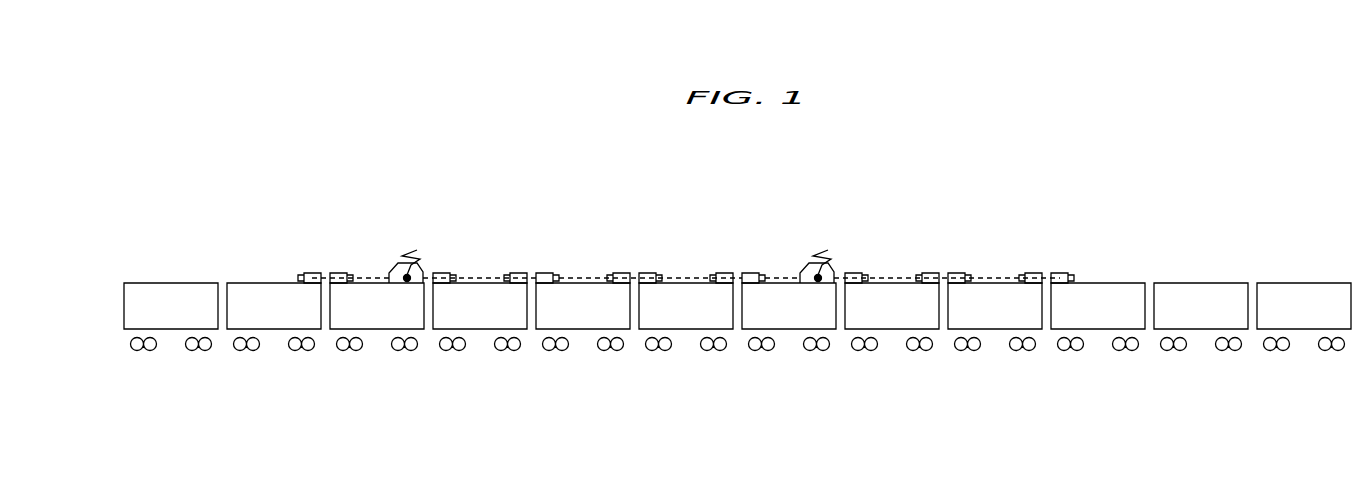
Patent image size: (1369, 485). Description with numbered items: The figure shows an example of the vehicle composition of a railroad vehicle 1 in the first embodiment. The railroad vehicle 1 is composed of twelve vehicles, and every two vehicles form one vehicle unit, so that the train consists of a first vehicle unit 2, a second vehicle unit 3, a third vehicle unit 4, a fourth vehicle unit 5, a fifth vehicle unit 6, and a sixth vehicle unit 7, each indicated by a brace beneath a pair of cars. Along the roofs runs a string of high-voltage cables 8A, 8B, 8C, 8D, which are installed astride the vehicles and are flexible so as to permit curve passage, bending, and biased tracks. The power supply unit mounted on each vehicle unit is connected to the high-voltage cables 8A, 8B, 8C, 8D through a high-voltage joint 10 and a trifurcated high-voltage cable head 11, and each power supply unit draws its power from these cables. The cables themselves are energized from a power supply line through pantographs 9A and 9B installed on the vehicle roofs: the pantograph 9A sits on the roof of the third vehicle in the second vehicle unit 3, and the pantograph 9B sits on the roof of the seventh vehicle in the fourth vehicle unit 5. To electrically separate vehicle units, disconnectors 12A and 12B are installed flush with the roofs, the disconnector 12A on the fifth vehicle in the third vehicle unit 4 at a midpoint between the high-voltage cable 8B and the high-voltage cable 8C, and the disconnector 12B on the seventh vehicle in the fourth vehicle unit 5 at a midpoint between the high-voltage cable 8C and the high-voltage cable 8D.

The railroad vehicle 1 is at (737, 375).
The first vehicle unit 2 is at (126, 360).
The second vehicle unit 3 is at (528, 360).
The third vehicle unit 4 is at (734, 360).
The fourth vehicle unit 5 is at (940, 360).
The fifth vehicle unit 6 is at (1146, 360).
The sixth vehicle unit 7 is at (1252, 346).
The high-voltage cable 8A is at (378, 278).
The high-voltage cable 8B is at (476, 278).
The high-voltage cable 8C is at (682, 278).
The high-voltage cable 8D is at (781, 278).
The pantograph 9A is at (417, 250).
The pantograph 9B is at (828, 250).
The high-voltage joint 10 is at (1058, 273).
The trifurcated high-voltage cable head 11 is at (852, 273).
The disconnector 12A is at (545, 273).
The disconnector 12B is at (748, 273).